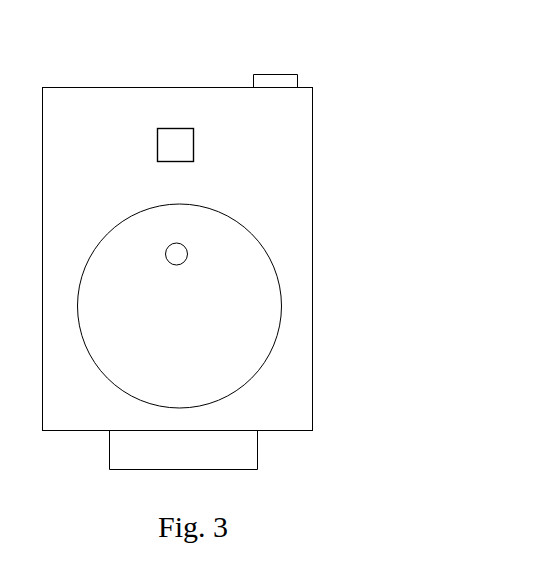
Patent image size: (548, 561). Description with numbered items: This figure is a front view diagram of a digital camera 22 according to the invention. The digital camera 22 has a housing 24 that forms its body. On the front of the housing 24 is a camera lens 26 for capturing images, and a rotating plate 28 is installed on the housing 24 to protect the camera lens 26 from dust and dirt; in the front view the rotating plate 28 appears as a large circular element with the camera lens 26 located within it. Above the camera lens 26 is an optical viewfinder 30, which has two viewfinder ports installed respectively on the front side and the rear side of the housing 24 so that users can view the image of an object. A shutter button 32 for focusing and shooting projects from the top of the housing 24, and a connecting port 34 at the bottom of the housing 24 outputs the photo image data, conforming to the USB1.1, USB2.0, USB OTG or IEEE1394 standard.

The digital camera 22 is at (416, 79).
The housing 24 is at (312, 118).
The camera lens 26 is at (188, 252).
The rotating plate 28 is at (279, 337).
The optical viewfinder 30 is at (194, 145).
The shutter button 32 is at (298, 77).
The connecting port 34 is at (258, 457).